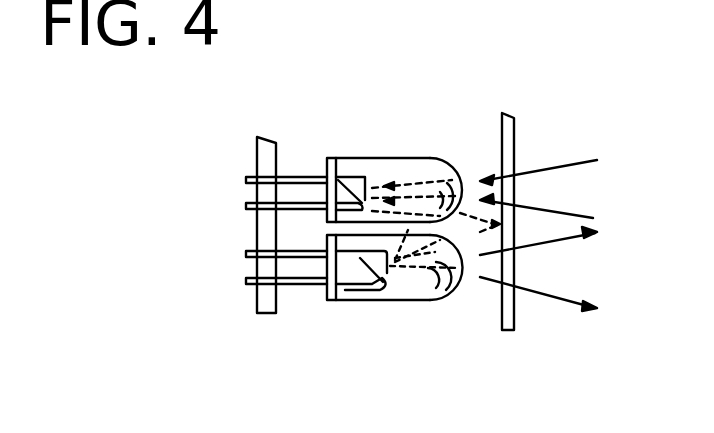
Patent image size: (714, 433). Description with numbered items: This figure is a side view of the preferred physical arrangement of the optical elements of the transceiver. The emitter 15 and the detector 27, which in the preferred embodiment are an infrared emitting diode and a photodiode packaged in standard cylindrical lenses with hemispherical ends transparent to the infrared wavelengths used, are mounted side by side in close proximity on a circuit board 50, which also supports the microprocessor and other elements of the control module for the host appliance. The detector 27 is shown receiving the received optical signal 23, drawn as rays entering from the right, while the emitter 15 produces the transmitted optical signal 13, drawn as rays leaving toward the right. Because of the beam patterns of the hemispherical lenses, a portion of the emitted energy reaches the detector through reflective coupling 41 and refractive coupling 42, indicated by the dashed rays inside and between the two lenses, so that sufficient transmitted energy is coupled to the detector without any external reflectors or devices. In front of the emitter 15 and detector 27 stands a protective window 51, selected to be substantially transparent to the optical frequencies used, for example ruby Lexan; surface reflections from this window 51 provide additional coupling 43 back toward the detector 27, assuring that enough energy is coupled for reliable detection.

The transmitted optical signal 13 is at (558, 300).
The emitter 15 is at (362, 310).
The received optical signal 23 is at (556, 165).
The detector 27 is at (355, 158).
The reflective coupling 41 is at (430, 178).
The refractive coupling 42 is at (420, 268).
The additional coupling 43 is at (455, 238).
The circuit board 50 is at (266, 313).
The protective window 51 is at (508, 330).